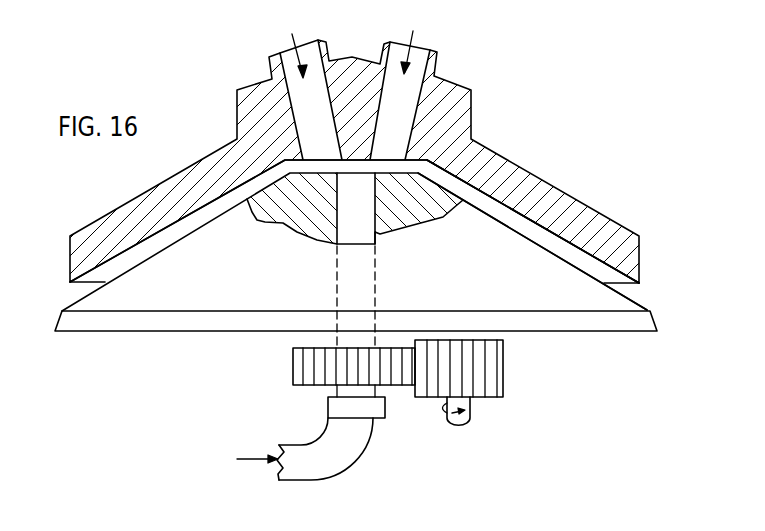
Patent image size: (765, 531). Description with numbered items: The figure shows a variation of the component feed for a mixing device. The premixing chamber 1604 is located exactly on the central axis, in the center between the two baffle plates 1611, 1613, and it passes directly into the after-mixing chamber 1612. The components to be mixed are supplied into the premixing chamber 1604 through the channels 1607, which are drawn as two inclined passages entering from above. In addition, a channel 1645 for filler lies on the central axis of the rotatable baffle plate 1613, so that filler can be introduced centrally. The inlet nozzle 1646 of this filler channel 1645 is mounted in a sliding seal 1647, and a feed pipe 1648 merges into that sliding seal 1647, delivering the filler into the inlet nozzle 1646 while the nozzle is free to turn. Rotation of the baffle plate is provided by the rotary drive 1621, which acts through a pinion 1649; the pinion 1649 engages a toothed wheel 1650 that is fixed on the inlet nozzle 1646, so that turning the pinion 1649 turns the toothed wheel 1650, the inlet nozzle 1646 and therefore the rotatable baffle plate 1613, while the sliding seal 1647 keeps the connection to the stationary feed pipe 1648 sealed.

The channels 1607 is at (317, 80).
The premixing chamber 1604 is at (354, 219).
The after-mixing chamber 1612 is at (533, 216).
The rotatable baffle plate 1613 is at (532, 241).
The baffle plate 1611 is at (382, 165).
The channel for filler 1645 is at (347, 218).
The toothed wheel 1650 is at (304, 366).
The inlet nozzle 1646 is at (284, 391).
The sliding seal 1647 is at (289, 411).
The feed pipe 1648 is at (353, 453).
The pinion 1649 is at (492, 368).
The rotary drive 1621 is at (472, 409).